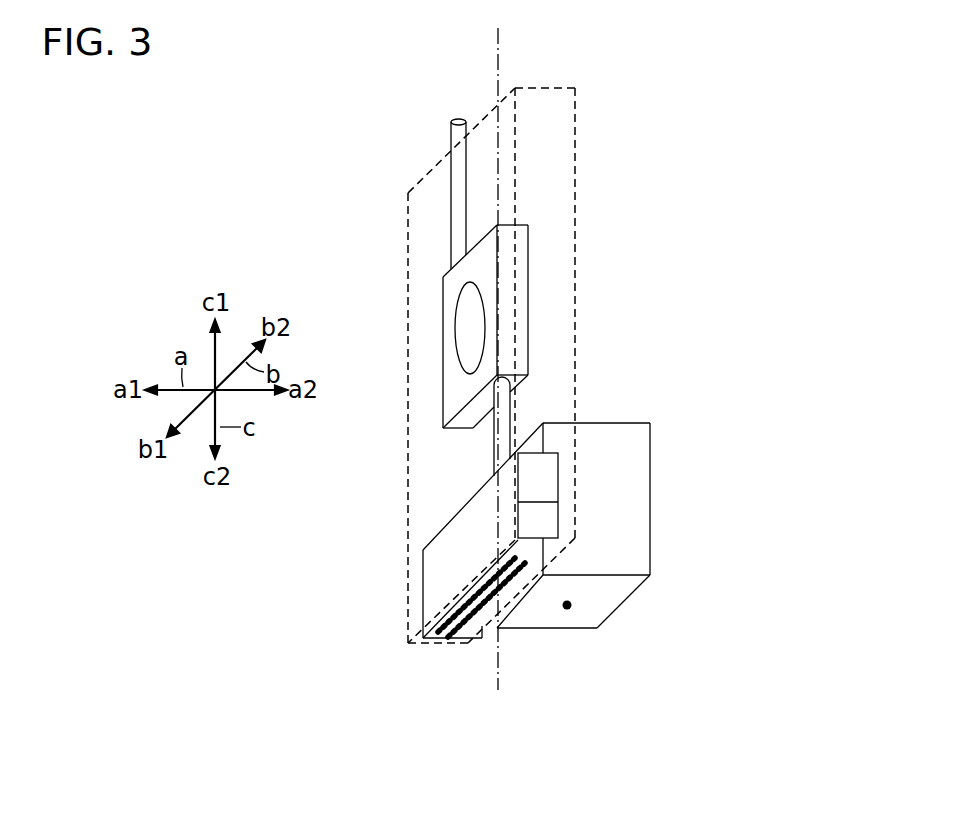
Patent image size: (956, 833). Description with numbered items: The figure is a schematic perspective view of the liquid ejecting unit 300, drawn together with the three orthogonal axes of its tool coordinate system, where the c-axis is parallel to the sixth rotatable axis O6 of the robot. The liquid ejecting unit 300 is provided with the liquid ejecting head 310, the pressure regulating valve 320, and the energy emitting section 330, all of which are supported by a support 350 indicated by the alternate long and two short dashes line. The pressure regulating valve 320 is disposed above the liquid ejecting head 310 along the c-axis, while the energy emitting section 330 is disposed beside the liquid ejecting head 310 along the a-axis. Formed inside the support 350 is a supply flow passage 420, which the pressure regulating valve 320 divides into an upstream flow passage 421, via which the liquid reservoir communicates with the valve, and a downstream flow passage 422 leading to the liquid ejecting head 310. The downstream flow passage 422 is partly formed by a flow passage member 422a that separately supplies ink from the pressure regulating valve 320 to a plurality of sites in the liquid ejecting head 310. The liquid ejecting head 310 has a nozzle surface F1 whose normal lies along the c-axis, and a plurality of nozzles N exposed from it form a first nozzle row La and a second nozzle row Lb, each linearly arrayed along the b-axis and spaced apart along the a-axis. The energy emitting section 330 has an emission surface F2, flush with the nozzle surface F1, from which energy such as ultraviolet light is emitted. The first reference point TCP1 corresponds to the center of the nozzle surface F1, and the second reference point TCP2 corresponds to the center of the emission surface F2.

The liquid ejecting unit 300 is at (372, 172).
The liquid ejecting head 310 is at (475, 588).
The pressure regulating valve 320 is at (442, 328).
The energy emitting section 330 is at (651, 557).
The support 350 is at (578, 148).
The supply flow passage 420 is at (599, 328).
The upstream flow passage 421 is at (460, 195).
The downstream flow passage 422 is at (512, 413).
The flow passage member 422a is at (457, 528).
The sixth rotatable axis O6 is at (497, 58).
The nozzle N is at (418, 633).
The first reference point TCP1 is at (478, 590).
The second reference point TCP2 is at (571, 606).
The nozzle surface F1 is at (444, 641).
The emission surface F2 is at (597, 628).
The first nozzle row La is at (483, 640).
The second nozzle row Lb is at (428, 647).